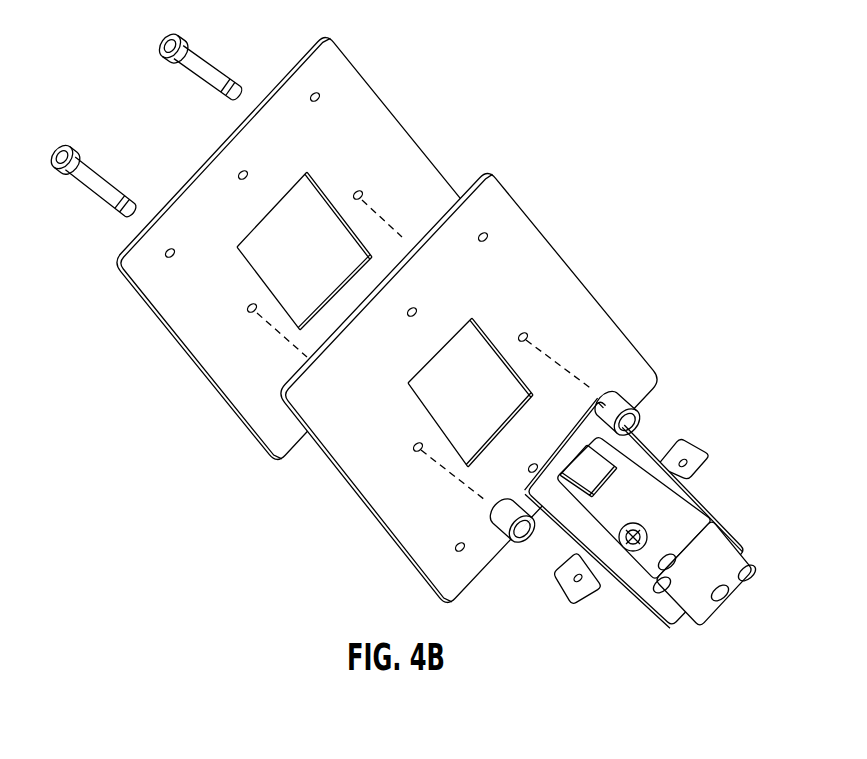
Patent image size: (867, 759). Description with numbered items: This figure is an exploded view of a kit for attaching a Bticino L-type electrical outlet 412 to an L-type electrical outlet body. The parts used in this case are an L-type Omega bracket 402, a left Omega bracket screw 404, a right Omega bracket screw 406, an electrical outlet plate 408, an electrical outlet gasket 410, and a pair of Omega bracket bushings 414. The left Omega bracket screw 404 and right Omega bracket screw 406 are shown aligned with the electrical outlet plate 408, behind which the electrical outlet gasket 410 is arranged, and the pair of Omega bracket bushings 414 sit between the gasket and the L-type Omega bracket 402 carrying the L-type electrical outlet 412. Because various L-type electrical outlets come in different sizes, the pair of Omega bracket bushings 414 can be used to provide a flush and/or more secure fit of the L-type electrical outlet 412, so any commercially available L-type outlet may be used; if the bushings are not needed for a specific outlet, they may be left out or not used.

The L-type Omega bracket 402 is at (690, 465).
The left Omega bracket screw 404 is at (93, 177).
The right Omega bracket screw 406 is at (207, 67).
The electrical outlet plate 408 is at (373, 118).
The electrical outlet gasket 410 is at (520, 240).
The Bticino L-type electrical outlet 412 is at (647, 497).
The pair of Omega bracket bushings 414 is at (620, 393).